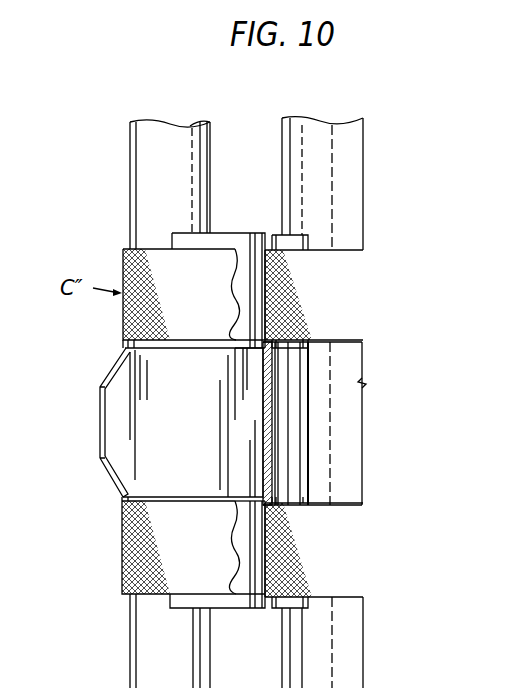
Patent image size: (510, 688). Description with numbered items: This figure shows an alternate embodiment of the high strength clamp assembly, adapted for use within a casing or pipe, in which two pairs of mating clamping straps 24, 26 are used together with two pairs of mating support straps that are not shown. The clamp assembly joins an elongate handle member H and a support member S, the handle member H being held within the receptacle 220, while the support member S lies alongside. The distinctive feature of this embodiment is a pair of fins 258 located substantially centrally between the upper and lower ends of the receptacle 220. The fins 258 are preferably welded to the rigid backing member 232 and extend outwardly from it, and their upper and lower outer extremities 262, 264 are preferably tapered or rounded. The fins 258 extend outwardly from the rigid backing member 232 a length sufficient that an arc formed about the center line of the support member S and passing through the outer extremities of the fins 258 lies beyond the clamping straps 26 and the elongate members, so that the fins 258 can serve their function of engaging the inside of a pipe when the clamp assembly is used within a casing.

The handle member H is at (130, 152).
The support member S is at (282, 155).
The clamping strap 26 is at (158, 262).
The clamping strap 24 is at (332, 277).
The receptacle 220 is at (237, 603).
The fin 258 is at (137, 378).
The upper outer extremity 262 is at (104, 380).
The lower outer extremity 264 is at (102, 465).
The rigid backing member 232 is at (300, 415).